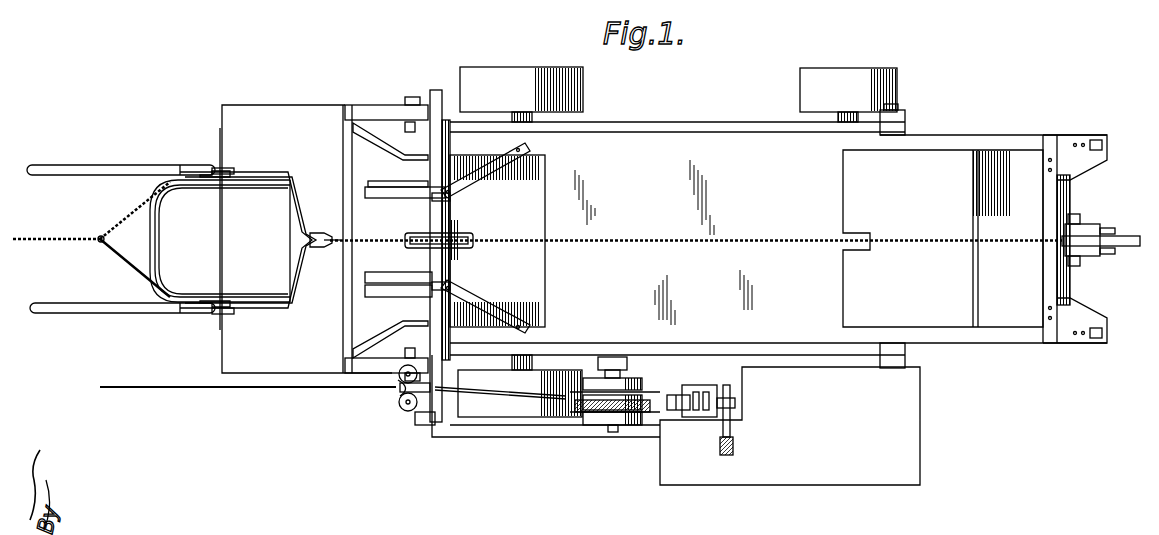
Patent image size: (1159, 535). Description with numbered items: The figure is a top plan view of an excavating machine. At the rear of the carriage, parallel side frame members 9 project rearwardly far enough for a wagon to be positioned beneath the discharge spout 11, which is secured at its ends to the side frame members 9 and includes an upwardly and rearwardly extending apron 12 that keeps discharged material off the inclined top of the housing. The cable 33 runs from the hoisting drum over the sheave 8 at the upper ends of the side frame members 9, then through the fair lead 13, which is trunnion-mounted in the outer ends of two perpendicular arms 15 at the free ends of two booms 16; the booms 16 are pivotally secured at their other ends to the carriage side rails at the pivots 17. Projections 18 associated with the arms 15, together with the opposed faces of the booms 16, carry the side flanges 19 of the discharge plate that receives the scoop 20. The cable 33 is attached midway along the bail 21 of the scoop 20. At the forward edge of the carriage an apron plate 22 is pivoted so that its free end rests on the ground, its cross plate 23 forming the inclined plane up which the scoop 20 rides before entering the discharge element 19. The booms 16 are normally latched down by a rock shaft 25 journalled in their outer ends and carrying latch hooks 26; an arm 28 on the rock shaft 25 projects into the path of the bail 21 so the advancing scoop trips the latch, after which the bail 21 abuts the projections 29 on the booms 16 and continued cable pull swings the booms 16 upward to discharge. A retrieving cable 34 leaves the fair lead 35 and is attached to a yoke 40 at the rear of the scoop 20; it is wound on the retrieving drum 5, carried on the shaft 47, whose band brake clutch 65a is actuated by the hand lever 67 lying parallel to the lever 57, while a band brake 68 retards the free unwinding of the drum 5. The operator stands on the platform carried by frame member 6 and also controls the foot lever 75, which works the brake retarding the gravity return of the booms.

The retrieving drum 5 is at (598, 420).
The frame member 6 is at (512, 436).
The sheave 8 is at (1120, 236).
The side frame member 9 is at (1003, 150).
The discharge spout 11 is at (1020, 296).
The apron 12 is at (860, 292).
The fair lead 13 is at (473, 238).
The perpendicular arm 15 is at (455, 180).
The boom 16 is at (640, 126).
The boom pivot 17 is at (905, 118).
The projection 18 is at (476, 306).
The side flange of discharge plate 19 is at (530, 190).
The scoop 20 is at (180, 200).
The bail 21 is at (300, 175).
The apron plate 22 is at (375, 110).
The cross plate 23 is at (235, 343).
The rock shaft 25 is at (424, 210).
The latch hook 26 is at (405, 140).
The arm 28 is at (391, 280).
The projection 29 is at (383, 188).
The cable 33 is at (753, 240).
The retrieving cable 34 is at (36, 244).
The fair lead 35 is at (398, 394).
The yoke 40 is at (130, 278).
The shaft 47 is at (613, 432).
The lever 57 is at (715, 378).
The band brake clutch 65a is at (625, 372).
The hand lever 67 is at (676, 395).
The band brake 68 is at (640, 426).
The foot lever 75 is at (720, 447).